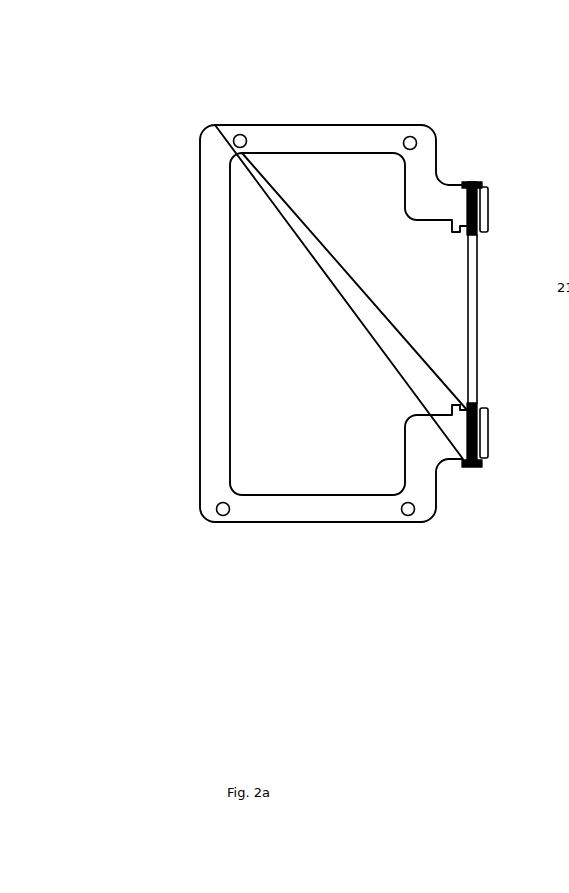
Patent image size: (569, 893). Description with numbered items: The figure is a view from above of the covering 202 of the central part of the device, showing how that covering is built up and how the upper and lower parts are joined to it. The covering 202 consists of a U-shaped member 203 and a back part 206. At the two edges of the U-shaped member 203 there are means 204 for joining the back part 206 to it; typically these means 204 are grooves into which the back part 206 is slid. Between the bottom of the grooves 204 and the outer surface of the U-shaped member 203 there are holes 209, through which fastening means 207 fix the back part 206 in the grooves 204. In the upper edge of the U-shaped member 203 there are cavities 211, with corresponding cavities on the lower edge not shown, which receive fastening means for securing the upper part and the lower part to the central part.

The covering 202 is at (168, 340).
The U-shaped member 203 is at (190, 277).
The means for joining 204 is at (490, 400).
The back part 206 is at (482, 320).
The fastening means 207 is at (468, 167).
The holes 209 is at (485, 187).
The cavities 211 is at (397, 130).